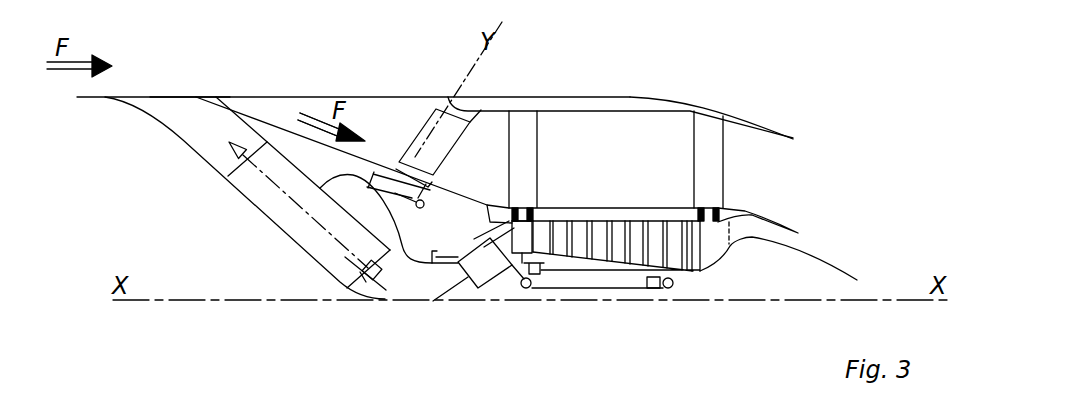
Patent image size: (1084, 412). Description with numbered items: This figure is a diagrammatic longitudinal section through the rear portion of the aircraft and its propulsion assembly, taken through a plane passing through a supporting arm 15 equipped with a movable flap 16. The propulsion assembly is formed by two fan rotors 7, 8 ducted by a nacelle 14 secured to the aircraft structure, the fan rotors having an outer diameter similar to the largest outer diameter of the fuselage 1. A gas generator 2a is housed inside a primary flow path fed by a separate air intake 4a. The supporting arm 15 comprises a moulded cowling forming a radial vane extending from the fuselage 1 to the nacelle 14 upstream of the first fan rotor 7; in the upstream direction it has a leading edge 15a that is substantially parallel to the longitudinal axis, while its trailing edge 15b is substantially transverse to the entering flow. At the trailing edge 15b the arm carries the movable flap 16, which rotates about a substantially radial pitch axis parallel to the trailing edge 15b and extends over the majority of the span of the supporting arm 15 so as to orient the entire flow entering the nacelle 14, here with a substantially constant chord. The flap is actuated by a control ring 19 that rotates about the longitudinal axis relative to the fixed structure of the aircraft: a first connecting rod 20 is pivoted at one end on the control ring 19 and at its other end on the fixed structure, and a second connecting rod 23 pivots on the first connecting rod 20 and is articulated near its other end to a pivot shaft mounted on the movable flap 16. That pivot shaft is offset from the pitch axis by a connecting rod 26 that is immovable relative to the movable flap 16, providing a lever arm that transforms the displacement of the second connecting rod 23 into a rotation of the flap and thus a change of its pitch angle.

The fuselage 1 is at (265, 116).
The gas generator 2a is at (262, 192).
The air intake 4a is at (165, 111).
The first fan rotor 7 is at (528, 155).
The second fan rotor 8 is at (707, 161).
The nacelle 14 is at (633, 96).
The supporting arm 15 is at (380, 118).
The leading edge 15a is at (287, 97).
The trailing edge 15b is at (450, 143).
The movable flap 16 is at (416, 127).
The control ring 19 is at (419, 208).
The first connecting rod 20 is at (393, 199).
The second connecting rod 23 is at (362, 173).
The connecting rod 26 is at (432, 183).